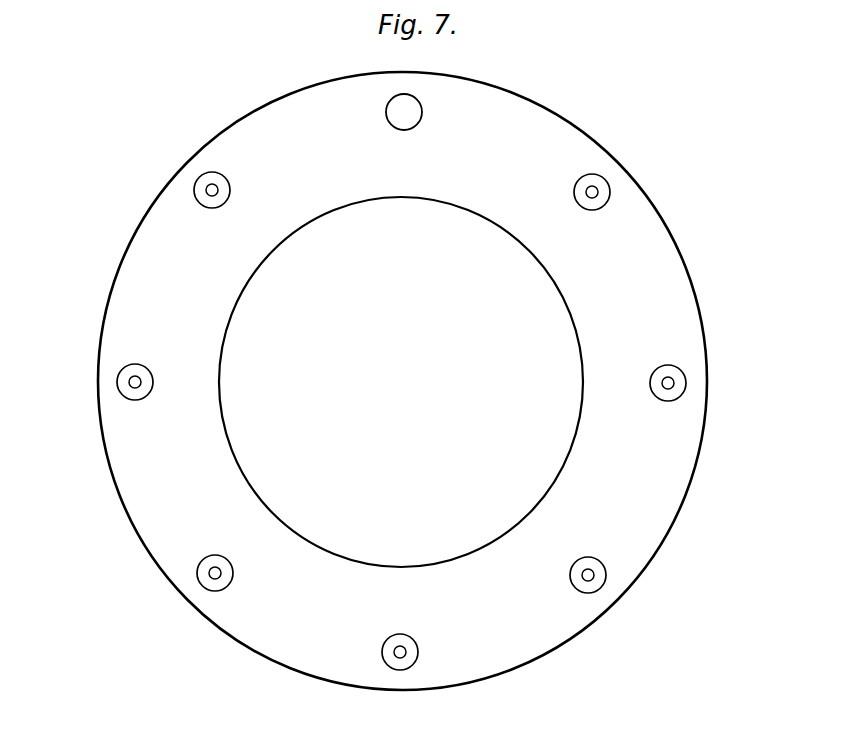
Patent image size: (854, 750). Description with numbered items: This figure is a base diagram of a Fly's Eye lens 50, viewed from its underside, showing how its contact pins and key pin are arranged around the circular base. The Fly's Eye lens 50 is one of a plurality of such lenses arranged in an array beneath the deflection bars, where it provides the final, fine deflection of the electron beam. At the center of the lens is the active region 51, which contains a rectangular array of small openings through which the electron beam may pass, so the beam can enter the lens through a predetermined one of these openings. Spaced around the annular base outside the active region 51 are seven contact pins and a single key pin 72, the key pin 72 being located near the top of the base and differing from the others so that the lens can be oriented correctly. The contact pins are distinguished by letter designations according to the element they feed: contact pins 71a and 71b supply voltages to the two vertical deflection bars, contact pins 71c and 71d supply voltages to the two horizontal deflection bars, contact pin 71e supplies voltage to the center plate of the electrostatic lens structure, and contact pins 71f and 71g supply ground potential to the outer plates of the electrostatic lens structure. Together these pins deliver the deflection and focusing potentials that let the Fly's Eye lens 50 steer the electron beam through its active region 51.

The Fly's Eye lens 50 is at (101, 463).
The active region 51 is at (397, 414).
The key pin 72 is at (392, 98).
The contact pin 71a is at (210, 574).
The contact pin 71b is at (597, 189).
The contact pin 71c is at (593, 580).
The contact pin 71d is at (208, 184).
The contact pin 71e is at (397, 658).
The contact pin 71f is at (673, 382).
The contact pin 71g is at (130, 382).